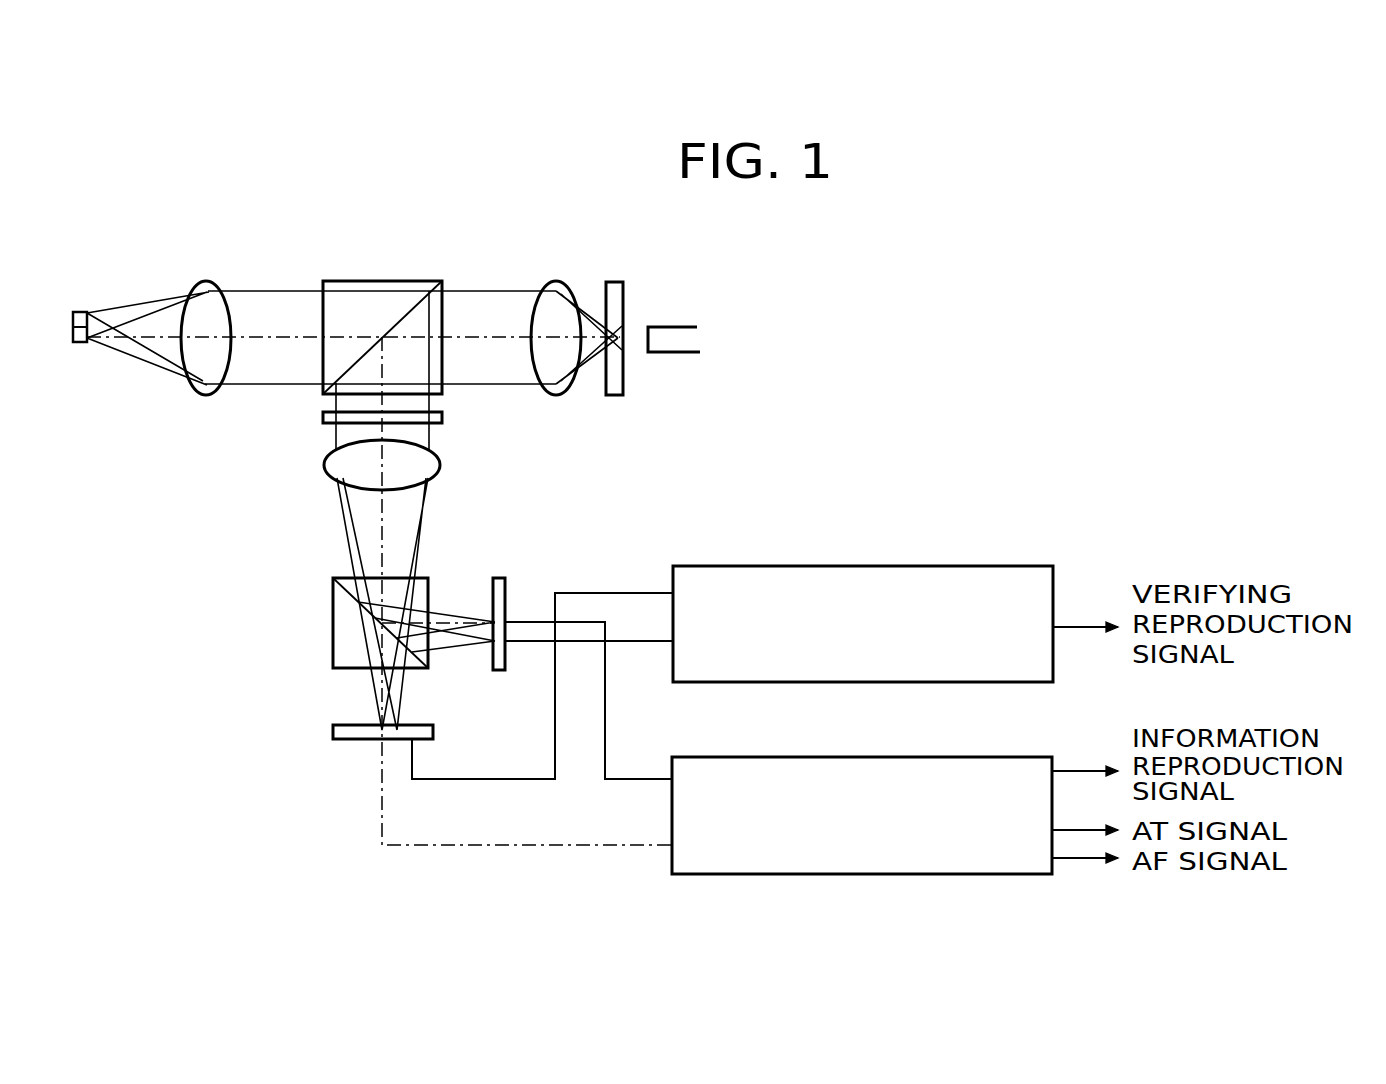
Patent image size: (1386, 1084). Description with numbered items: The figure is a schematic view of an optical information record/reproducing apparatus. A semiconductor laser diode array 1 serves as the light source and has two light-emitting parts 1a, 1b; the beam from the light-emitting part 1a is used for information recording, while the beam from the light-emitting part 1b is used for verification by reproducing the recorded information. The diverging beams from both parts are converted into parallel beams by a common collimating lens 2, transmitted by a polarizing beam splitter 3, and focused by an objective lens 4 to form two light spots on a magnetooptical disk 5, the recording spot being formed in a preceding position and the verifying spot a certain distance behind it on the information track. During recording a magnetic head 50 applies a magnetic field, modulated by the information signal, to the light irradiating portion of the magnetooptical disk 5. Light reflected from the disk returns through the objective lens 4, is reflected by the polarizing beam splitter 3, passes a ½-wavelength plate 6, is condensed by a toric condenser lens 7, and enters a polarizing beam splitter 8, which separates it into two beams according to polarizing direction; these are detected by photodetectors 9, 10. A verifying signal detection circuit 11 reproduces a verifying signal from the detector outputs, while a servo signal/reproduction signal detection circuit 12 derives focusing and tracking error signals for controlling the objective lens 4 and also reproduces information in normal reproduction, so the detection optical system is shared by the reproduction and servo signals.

The semiconductor laser diode array 1 is at (66, 327).
The light-emitting part 1a is at (80, 345).
The light-emitting part 1b is at (78, 310).
The collimating lens 2 is at (203, 280).
The polarizing beam splitter 3 is at (385, 280).
The objective lens 4 is at (557, 280).
The magnetooptical disk 5 is at (613, 280).
The magnetic head 50 is at (668, 327).
The ½-wavelength plate 6 is at (442, 417).
The toric condenser lens 7 is at (437, 473).
The polarizing beam splitter 8 is at (428, 578).
The photodetector 9 is at (333, 731).
The photodetector 10 is at (505, 590).
The verifying signal detection circuit 11 is at (940, 566).
The servo signal/reproduction signal detection circuit 12 is at (913, 757).